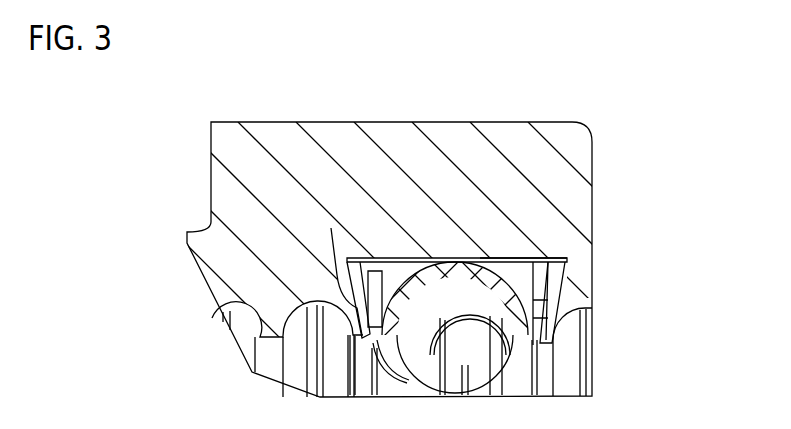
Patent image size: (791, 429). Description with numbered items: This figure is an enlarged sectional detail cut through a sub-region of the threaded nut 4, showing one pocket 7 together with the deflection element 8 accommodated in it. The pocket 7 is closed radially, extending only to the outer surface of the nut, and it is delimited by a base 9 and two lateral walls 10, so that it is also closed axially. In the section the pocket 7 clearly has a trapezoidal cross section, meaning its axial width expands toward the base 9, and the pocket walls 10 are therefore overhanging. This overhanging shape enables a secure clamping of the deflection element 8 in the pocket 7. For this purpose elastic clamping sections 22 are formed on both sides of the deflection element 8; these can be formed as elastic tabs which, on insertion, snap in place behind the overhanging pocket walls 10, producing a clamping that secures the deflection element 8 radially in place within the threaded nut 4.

The threaded nut 4 is at (285, 119).
The pocket 7 is at (512, 246).
The deflection element 8 is at (456, 263).
The base 9 is at (398, 258).
The lateral walls 10 is at (337, 270).
The elastic clamping sections 22 is at (540, 290).